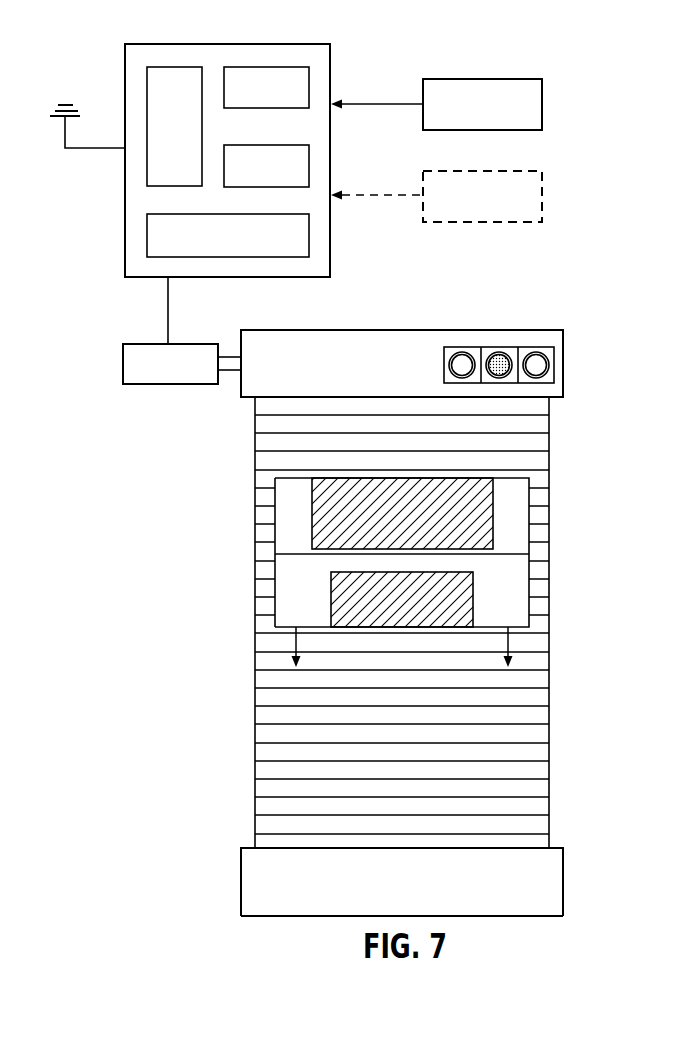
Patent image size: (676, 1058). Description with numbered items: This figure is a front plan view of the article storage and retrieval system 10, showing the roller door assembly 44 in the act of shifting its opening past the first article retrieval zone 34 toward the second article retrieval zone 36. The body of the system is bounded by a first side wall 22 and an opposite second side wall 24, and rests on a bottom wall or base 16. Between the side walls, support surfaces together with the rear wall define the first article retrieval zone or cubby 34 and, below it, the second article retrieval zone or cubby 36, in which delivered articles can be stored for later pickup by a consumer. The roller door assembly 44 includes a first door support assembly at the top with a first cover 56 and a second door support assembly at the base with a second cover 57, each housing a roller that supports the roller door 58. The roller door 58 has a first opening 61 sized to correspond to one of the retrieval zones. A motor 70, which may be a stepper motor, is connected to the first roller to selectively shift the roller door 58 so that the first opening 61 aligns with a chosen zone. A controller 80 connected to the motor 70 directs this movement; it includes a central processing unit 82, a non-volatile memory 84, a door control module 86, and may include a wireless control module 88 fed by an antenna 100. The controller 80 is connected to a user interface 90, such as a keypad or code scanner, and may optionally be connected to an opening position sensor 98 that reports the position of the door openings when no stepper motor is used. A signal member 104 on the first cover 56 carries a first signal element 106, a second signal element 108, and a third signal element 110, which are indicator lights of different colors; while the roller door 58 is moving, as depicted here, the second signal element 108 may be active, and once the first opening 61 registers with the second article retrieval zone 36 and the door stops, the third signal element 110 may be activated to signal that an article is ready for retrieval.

The article storage and retrieval system 10 is at (419, 604).
The bottom wall or base 16 is at (512, 917).
The first side wall 22 is at (392, 572).
The second side wall 24 is at (550, 605).
The first article retrieval zone or cubby 34 is at (510, 512).
The second article retrieval zone or cubby 36 is at (510, 582).
The roller door assembly 44 is at (435, 324).
The first cover 56 is at (274, 362).
The second cover 57 is at (250, 885).
The roller door 58 is at (277, 738).
The first opening 61 is at (282, 524).
The motor 70 is at (170, 386).
The controller 80 is at (186, 194).
The central processing unit (CPU) 82 is at (191, 142).
The non-volatile memory 84 is at (284, 99).
The door control module 86 is at (284, 177).
The wireless control module 88 is at (245, 247).
The user interface 90 is at (498, 117).
The opening position sensor 98 is at (498, 211).
The antenna 100 is at (68, 130).
The signal member 104 is at (486, 334).
The first signal element 106 is at (458, 353).
The second signal element 108 is at (499, 352).
The third signal element 110 is at (540, 365).